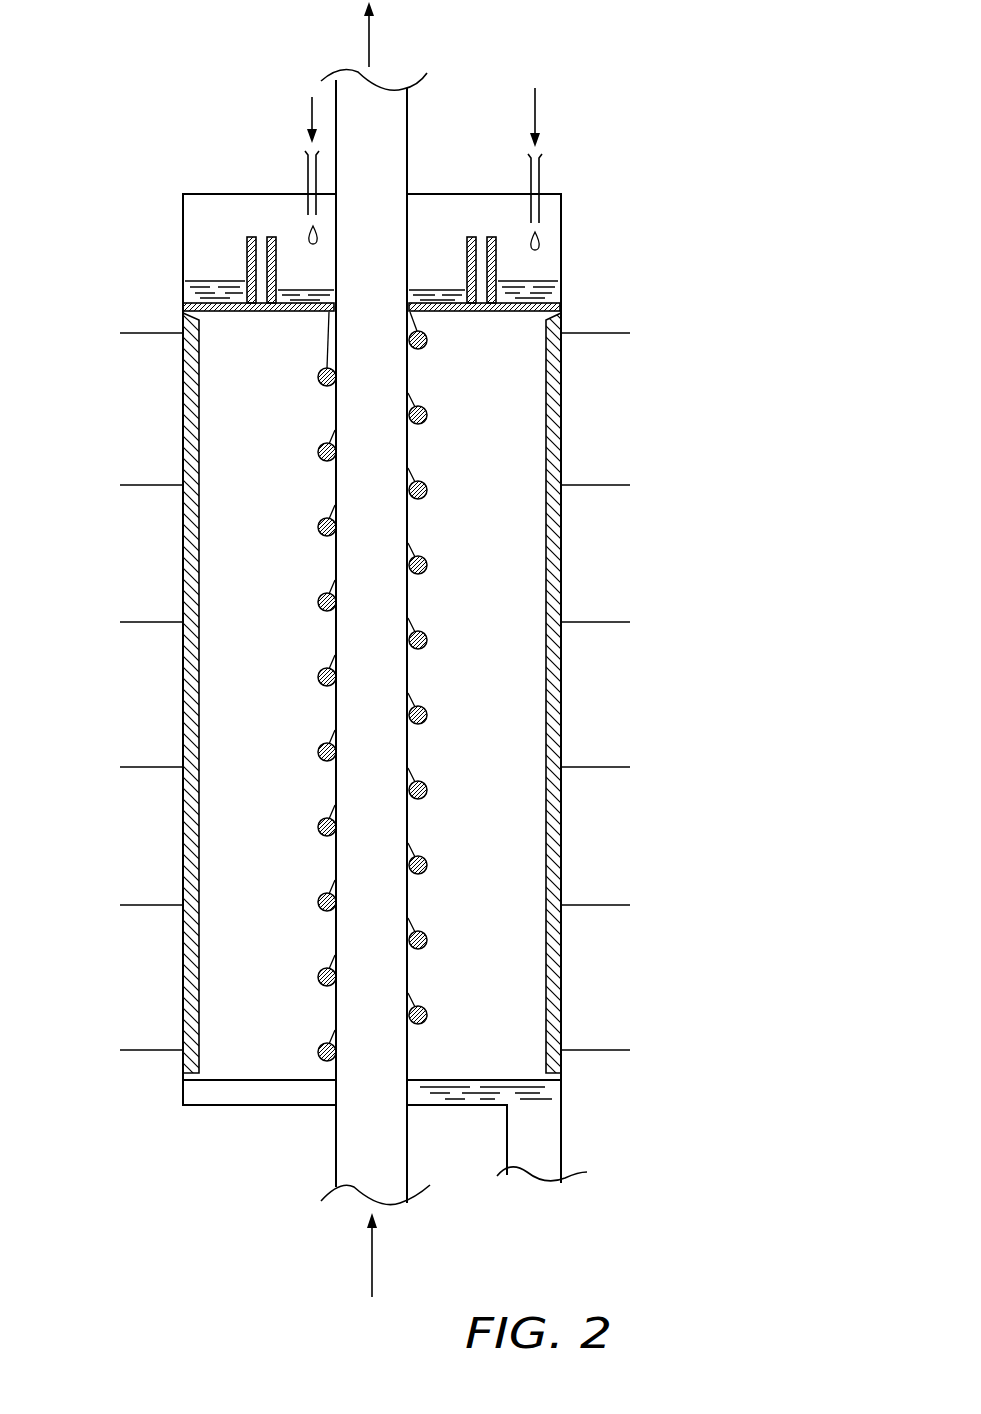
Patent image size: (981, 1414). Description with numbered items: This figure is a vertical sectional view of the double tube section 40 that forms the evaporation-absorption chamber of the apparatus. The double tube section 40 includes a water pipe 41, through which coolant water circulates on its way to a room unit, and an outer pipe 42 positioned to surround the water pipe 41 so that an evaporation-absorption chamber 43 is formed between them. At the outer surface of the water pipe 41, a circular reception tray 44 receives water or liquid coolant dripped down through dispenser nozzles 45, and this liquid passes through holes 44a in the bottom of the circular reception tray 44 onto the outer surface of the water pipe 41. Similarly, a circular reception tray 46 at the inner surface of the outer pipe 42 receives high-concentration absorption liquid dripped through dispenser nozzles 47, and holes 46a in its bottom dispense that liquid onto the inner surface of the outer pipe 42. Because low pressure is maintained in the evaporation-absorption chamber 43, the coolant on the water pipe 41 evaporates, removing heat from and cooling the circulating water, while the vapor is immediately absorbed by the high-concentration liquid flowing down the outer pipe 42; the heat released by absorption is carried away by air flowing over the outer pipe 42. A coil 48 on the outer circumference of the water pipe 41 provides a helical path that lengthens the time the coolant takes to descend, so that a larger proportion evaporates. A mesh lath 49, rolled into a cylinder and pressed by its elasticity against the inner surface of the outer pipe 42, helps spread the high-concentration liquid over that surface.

The double tube section 40 is at (682, 402).
The water pipe 41 is at (337, 1148).
The outer pipe 42 is at (563, 698).
The evaporation-absorption chamber 43 is at (228, 848).
The circular reception tray 44 is at (276, 244).
The holes 44a is at (333, 312).
The dispenser nozzles 45 is at (307, 207).
The circular reception tray 46 is at (497, 245).
The holes 46a is at (555, 311).
The dispenser nozzles 47 is at (540, 208).
The coil 48 is at (428, 637).
The mesh lath 49 is at (200, 666).